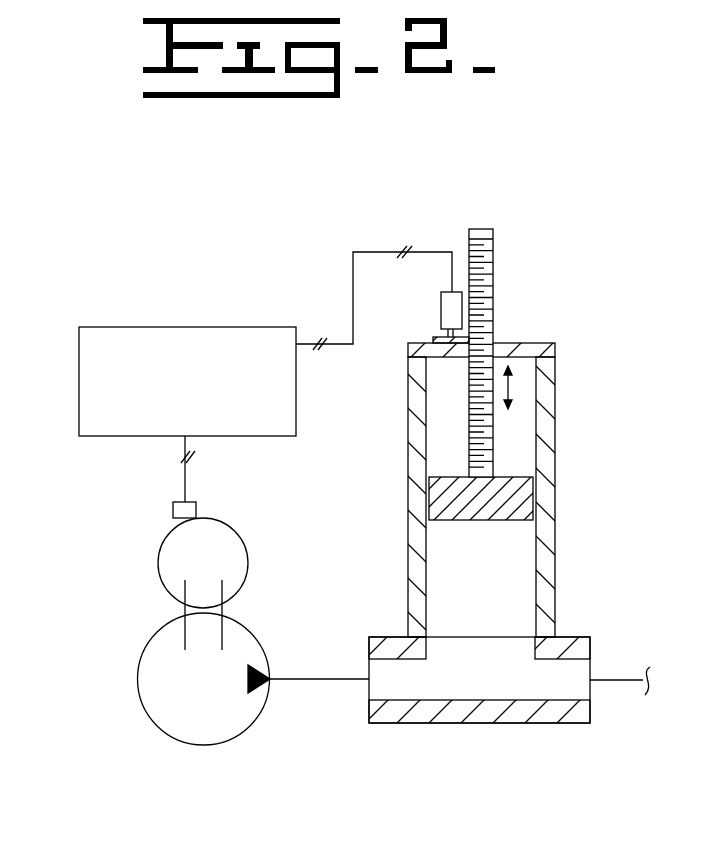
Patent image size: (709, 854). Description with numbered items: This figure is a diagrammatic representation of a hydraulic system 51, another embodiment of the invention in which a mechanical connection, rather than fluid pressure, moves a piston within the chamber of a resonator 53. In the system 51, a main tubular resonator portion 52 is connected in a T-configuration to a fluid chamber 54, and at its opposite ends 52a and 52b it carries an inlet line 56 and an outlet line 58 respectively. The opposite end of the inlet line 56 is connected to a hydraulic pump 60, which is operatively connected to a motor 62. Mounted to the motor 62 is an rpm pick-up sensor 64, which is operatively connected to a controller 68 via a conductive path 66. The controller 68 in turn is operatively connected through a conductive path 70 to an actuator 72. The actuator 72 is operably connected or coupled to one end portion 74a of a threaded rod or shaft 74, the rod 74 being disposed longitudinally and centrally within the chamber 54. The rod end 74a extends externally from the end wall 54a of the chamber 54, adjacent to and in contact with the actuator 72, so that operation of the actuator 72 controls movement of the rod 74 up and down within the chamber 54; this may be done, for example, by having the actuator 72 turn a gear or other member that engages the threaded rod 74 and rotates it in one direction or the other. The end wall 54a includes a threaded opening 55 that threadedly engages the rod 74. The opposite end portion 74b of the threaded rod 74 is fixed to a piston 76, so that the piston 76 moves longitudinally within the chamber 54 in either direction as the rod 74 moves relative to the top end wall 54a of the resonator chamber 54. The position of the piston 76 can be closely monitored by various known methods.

The hydraulic system 51 is at (315, 270).
The main tubular resonator portion 52 is at (481, 706).
The end of resonator portion 52a is at (367, 712).
The end of resonator portion 52b is at (592, 713).
The resonator 53 is at (397, 583).
The fluid chamber 54 is at (502, 567).
The end wall 54a is at (538, 348).
The threaded opening 55 is at (498, 343).
The inlet line 56 is at (327, 679).
The outlet line 58 is at (621, 679).
The hydraulic pump 60 is at (163, 710).
The motor 62 is at (228, 540).
The rpm pick-up sensor 64 is at (175, 513).
The conductive path 66 is at (187, 482).
The controller 68 is at (157, 338).
The conductive path 70 is at (373, 252).
The actuator 72 is at (441, 318).
The threaded rod 74 is at (493, 413).
The end portion of rod 74a is at (492, 267).
The end portion of rod 74b is at (493, 473).
The piston 76 is at (523, 488).